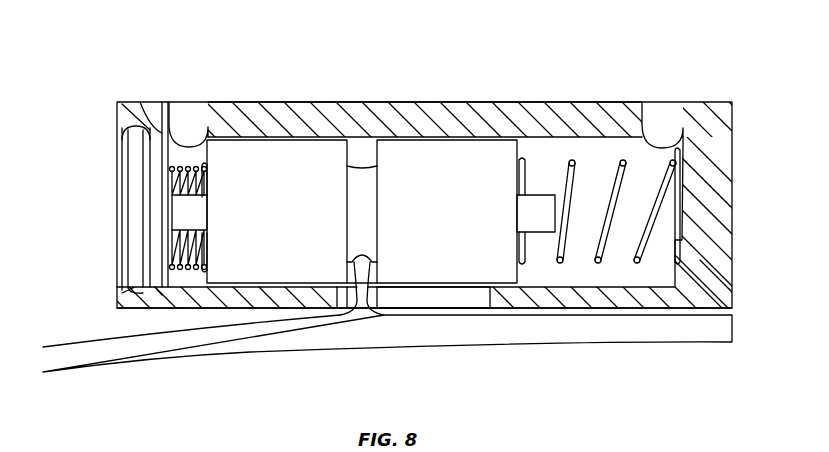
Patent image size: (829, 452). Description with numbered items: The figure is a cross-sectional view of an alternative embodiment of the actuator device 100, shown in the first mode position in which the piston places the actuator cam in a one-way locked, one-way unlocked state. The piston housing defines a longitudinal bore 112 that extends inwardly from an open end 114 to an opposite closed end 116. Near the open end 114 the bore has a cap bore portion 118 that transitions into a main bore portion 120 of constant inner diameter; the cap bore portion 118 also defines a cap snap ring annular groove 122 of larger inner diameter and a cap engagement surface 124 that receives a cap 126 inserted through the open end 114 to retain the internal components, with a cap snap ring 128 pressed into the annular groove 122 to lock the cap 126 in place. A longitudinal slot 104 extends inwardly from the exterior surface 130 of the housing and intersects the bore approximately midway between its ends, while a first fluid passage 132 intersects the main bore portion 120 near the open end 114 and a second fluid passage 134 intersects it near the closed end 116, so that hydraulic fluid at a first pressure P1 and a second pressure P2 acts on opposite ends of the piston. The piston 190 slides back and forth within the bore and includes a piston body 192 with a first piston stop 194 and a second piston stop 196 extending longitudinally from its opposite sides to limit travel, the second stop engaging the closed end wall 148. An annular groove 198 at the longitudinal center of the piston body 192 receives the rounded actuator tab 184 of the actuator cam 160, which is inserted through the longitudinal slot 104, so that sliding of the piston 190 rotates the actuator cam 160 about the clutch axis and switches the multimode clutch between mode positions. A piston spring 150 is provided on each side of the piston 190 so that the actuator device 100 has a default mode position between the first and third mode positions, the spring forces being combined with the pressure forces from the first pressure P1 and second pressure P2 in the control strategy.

The actuator device 100 is at (84, 47).
The longitudinal slot 104 is at (445, 297).
The longitudinal bore 112 is at (425, 81).
The open end 114 is at (118, 296).
The closed end 116 is at (732, 283).
The cap bore portion 118 is at (125, 132).
The main bore portion 120 is at (553, 102).
The cap snap ring annular groove 122 is at (130, 118).
The cap engagement surface 124 is at (160, 112).
The cap 126 is at (163, 190).
The cap snap ring 128 is at (138, 244).
The exterior surface 130 is at (482, 102).
The first fluid passage 132 is at (172, 108).
The second fluid passage 134 is at (677, 100).
The closed end wall 148 is at (683, 148).
The piston spring 150 is at (203, 165).
The actuator cam 160 is at (248, 343).
The actuator tab 184 is at (361, 272).
The piston 190 is at (412, 140).
The piston body 192 is at (290, 147).
The first piston stop 194 is at (190, 212).
The second piston stop 196 is at (532, 222).
The annular groove 198 is at (362, 165).
The first pressure P1 is at (181, 85).
The second pressure P2 is at (662, 85).